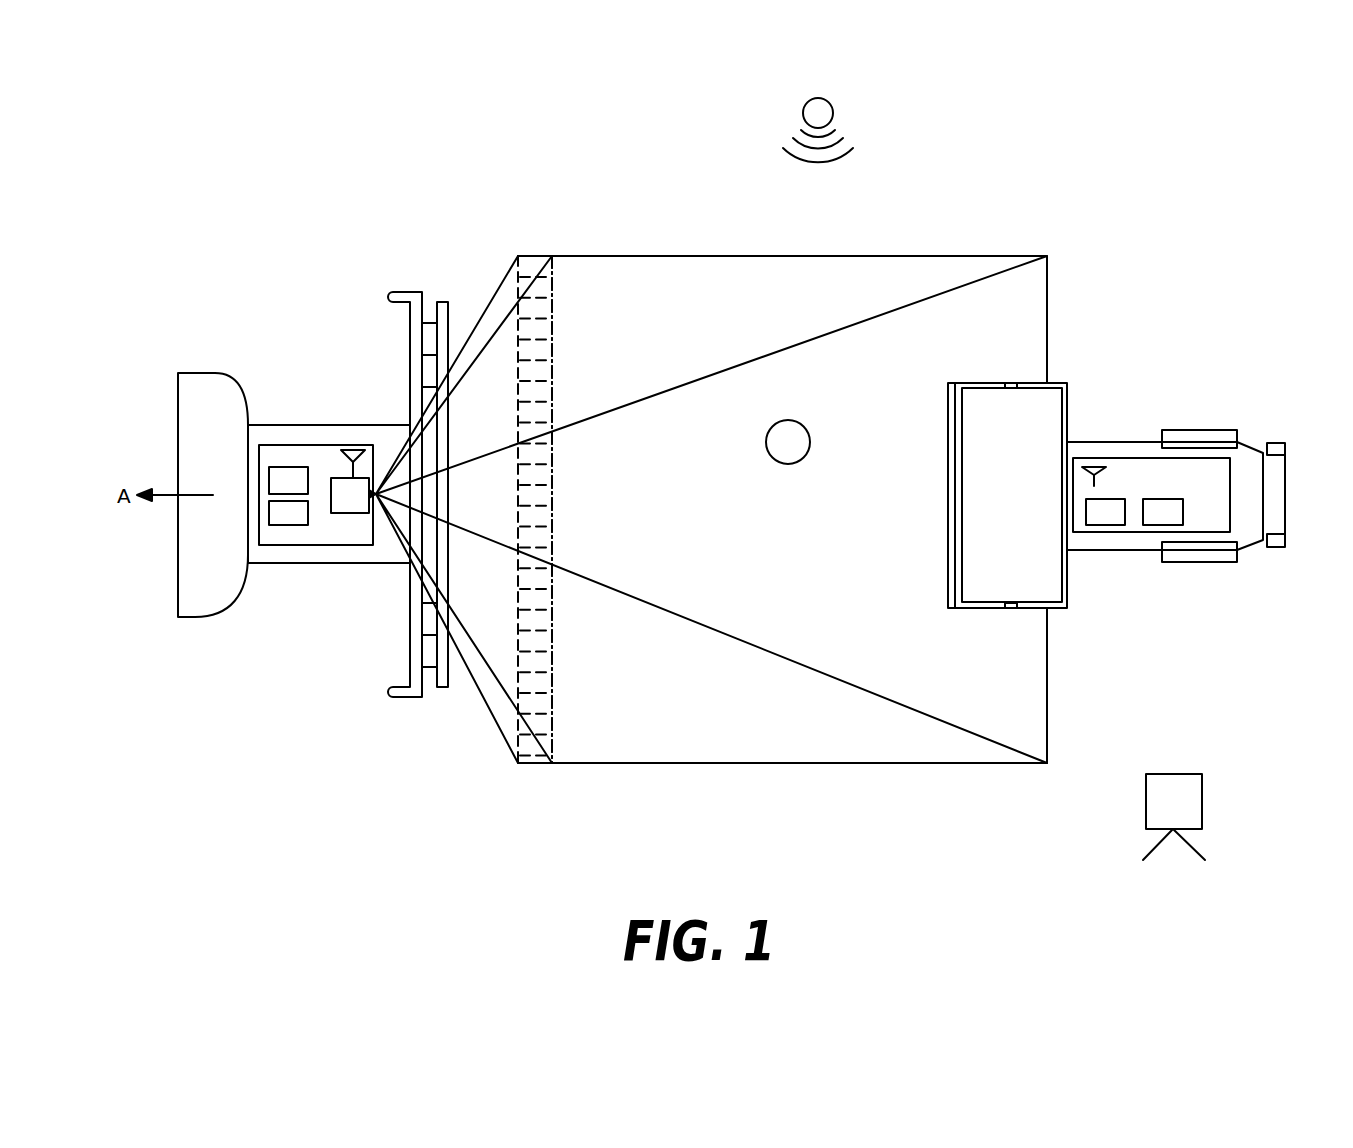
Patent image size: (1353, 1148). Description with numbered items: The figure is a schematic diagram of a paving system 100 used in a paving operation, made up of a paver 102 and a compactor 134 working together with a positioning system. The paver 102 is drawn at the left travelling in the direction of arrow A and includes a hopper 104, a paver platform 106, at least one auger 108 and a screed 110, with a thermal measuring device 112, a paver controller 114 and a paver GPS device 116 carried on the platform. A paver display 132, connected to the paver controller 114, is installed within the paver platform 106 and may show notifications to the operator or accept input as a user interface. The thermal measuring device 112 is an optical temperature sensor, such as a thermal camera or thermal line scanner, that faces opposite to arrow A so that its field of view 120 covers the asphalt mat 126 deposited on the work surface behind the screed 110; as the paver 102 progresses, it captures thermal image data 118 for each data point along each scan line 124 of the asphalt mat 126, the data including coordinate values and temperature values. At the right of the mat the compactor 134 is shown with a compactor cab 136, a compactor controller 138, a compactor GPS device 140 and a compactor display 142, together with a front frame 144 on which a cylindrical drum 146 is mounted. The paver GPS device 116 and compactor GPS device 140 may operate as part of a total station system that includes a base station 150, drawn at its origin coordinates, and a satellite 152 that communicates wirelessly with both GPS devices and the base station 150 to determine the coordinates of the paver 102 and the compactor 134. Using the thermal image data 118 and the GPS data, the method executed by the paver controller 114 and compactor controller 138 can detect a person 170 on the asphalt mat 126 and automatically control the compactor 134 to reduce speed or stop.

The paving system 100 is at (350, 228).
The paver 102 is at (278, 342).
The hopper 104 is at (200, 618).
The paver platform 106 is at (259, 458).
The auger 108 is at (413, 291).
The screed 110 is at (452, 302).
The thermal measuring device 112 is at (360, 513).
The paver controller 114 is at (297, 525).
The paver Global Positioning System (GPS) device 116 is at (353, 449).
The thermal image data 118 is at (530, 763).
The field of view 120 is at (758, 745).
The scan line 124 is at (537, 247).
The asphalt mat 126 is at (683, 256).
The paver display 132 is at (280, 467).
The compactor 134 is at (1176, 454).
The compactor cab 136 is at (1177, 562).
The compactor controller 138 is at (1097, 525).
The compactor GPS device 140 is at (1091, 456).
The compactor display 142 is at (1170, 499).
The front frame 144 is at (1003, 492).
The cylindrical drum 146 is at (1050, 405).
The base station 150 is at (1203, 800).
The satellite 152 is at (824, 99).
The person 170 is at (808, 437).